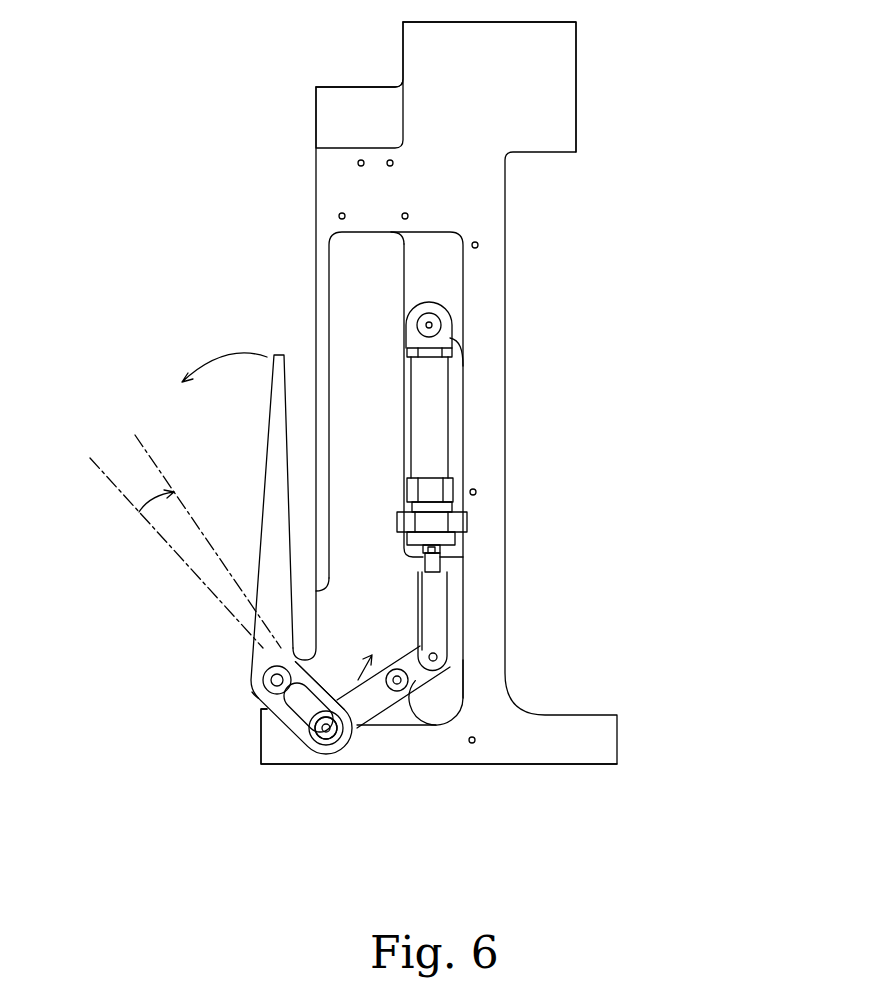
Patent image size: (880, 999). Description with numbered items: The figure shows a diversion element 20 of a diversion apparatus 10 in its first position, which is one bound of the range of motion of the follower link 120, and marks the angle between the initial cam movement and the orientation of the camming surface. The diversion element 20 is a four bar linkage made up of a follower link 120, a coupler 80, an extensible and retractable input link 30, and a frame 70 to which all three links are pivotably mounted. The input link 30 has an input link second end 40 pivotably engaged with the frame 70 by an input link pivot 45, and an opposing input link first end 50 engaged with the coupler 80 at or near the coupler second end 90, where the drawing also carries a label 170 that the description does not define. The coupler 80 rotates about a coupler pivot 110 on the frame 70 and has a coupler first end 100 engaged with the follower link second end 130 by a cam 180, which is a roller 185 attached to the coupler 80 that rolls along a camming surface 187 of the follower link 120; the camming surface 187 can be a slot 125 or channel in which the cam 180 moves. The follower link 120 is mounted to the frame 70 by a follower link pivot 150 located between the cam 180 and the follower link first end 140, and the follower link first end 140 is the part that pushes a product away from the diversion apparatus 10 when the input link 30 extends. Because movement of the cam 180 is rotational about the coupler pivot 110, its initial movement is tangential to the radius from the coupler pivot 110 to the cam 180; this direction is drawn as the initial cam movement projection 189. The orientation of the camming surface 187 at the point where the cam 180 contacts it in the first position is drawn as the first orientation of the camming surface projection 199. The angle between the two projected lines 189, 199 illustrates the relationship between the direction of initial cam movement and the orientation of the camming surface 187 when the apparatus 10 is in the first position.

The diversion apparatus 10 is at (389, 454).
The diversion element 20 is at (484, 420).
The extensible and retractable input link 30 is at (492, 423).
The input link second end 40 is at (482, 271).
The input link pivot 45 is at (440, 323).
The input link first end 50 is at (462, 680).
The frame 70 is at (506, 86).
The coupler 80 is at (393, 700).
The coupler second end 90 is at (447, 642).
The coupler first end 100 is at (313, 760).
The coupler pivot 110 is at (396, 667).
The follower link 120 is at (252, 650).
The slot 125 is at (265, 715).
The follower link second end 130 is at (345, 745).
The follower link first end 140 is at (280, 355).
The follower link pivot 150 is at (253, 684).
The opening 170 is at (462, 668).
The cam 180 is at (333, 745).
The roller 185 is at (356, 683).
The camming surface 187 is at (329, 655).
The initial cam movement projection 189 is at (190, 513).
The first orientation of the camming surface projection 199 is at (187, 562).